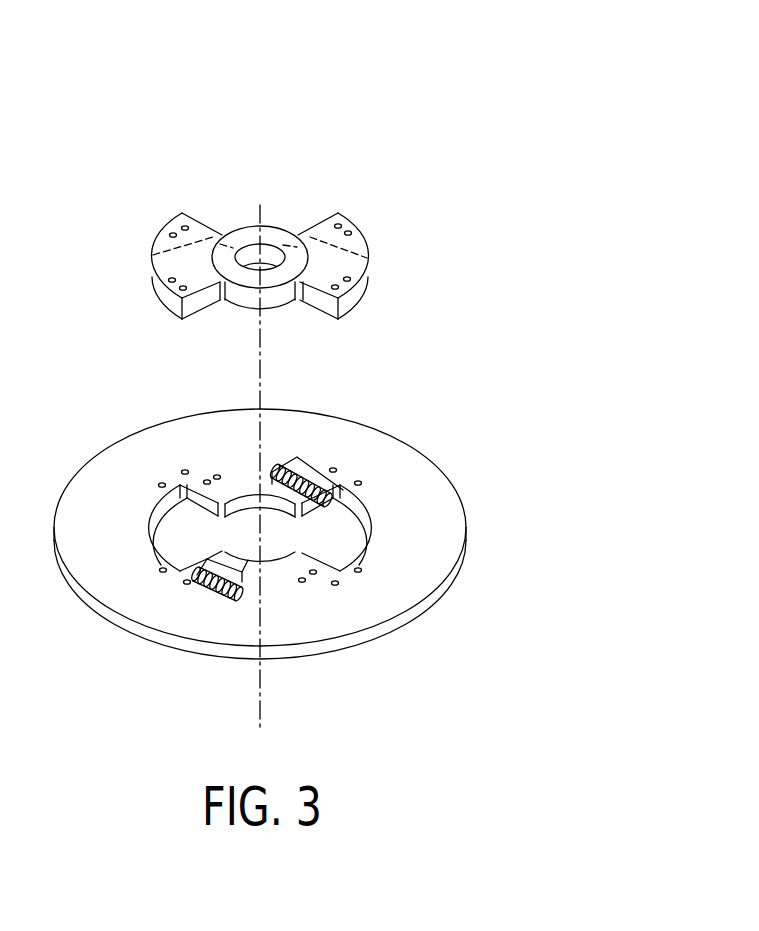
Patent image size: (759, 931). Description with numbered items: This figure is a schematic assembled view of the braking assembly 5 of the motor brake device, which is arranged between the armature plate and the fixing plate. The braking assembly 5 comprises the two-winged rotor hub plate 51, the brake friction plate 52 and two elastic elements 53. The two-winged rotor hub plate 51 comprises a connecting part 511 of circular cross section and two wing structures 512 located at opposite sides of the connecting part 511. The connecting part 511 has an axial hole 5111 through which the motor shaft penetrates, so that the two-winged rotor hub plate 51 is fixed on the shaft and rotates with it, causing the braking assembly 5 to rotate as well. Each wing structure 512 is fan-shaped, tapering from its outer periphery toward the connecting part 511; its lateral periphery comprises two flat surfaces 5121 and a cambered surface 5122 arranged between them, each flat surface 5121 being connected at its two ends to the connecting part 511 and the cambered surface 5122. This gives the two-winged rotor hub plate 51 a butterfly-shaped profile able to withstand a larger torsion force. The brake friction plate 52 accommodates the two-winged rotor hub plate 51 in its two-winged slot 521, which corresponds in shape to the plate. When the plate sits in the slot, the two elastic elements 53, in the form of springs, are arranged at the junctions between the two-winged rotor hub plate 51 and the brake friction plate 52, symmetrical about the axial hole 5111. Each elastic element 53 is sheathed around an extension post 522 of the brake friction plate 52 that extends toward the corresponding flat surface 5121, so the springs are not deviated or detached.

The braking assembly 5 is at (713, 135).
The two-winged rotor hub plate 51 is at (228, 172).
The connecting part 511 is at (277, 233).
The axial hole 5111 is at (273, 263).
The wing structures 512 is at (193, 262).
The flat surfaces 5121 is at (320, 227).
The cambered surface 5122 is at (362, 243).
The brake friction plate 52 is at (423, 498).
The two-winged slot 521 is at (327, 533).
The extension posts 522 is at (325, 495).
The elastic elements 53 is at (310, 487).